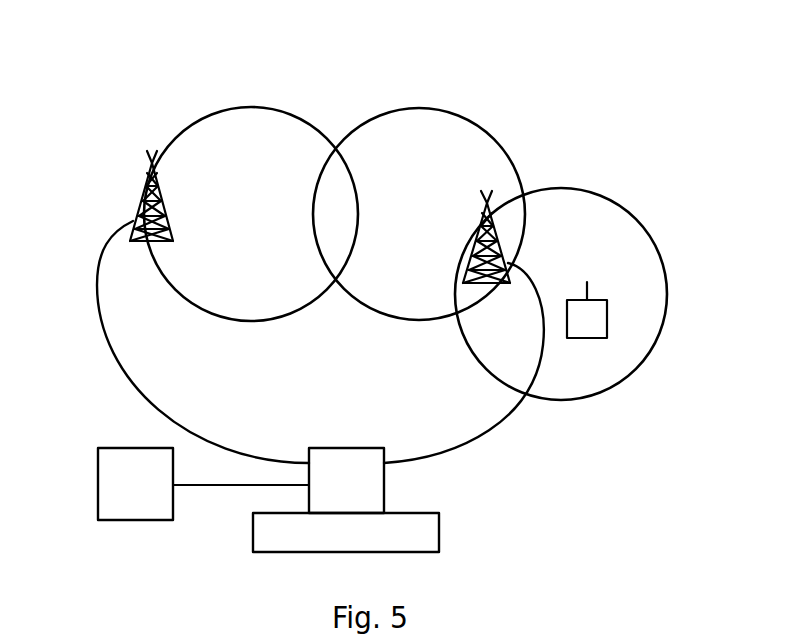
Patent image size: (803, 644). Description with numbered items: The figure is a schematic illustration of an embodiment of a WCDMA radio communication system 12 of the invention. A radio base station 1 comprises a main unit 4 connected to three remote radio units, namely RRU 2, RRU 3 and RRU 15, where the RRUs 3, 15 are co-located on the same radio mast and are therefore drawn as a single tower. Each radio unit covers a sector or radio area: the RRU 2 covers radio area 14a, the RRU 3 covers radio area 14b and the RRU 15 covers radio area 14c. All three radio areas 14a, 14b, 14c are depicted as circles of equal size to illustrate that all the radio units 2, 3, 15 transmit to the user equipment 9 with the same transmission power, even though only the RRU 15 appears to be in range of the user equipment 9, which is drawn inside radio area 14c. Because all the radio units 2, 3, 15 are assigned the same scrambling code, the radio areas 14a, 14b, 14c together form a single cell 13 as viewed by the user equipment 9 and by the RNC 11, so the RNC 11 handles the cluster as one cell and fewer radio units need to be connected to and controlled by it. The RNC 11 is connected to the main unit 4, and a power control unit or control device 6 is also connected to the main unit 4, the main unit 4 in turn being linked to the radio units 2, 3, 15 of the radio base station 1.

The radio base station 1 is at (542, 33).
The communication system 12 is at (131, 85).
The single cell 13 is at (567, 92).
The radio area 14a is at (257, 121).
The radio area 14b is at (438, 125).
The radio area 14c is at (655, 318).
The radio unit 2 is at (145, 182).
The radio unit 3 is at (520, 234).
The radio unit 15 is at (486, 197).
The user equipment 9 is at (607, 307).
The main unit 4 is at (382, 490).
The control device 6 is at (255, 547).
The RNC 11 is at (110, 511).